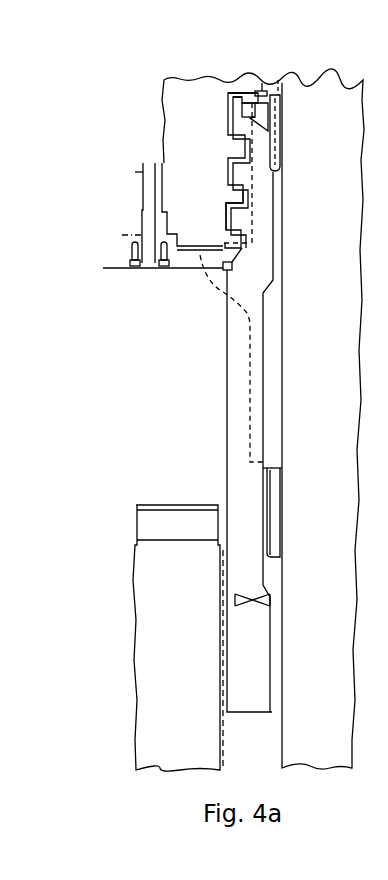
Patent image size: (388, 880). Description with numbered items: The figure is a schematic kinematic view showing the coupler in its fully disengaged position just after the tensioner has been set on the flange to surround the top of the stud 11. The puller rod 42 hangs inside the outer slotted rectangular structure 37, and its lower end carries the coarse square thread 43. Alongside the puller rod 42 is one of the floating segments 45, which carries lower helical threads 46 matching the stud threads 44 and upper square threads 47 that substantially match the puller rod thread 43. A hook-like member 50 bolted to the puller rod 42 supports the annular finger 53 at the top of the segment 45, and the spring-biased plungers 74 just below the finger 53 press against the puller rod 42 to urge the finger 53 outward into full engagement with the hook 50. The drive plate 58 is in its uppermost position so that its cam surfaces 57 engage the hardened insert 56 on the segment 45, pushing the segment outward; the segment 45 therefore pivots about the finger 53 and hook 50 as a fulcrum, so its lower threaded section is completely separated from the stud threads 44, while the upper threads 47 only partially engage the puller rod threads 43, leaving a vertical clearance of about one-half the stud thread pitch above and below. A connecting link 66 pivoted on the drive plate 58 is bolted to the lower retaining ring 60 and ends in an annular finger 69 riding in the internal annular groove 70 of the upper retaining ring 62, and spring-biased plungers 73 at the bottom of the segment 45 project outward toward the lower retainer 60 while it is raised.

The stud 11 is at (188, 598).
The outer slotted rectangular structure 37 is at (307, 90).
The puller rod 42 is at (201, 102).
The coarse square thread 43 is at (233, 152).
The stud threads 44 is at (220, 677).
The segments 45 is at (261, 278).
The threads 46 is at (227, 677).
The threads 47 is at (234, 217).
The hook-like members 50 is at (262, 83).
The annular finger 53 is at (240, 102).
The hardened insert 56 is at (223, 271).
The cam surfaces 57 is at (226, 248).
The drive plate 58 is at (182, 270).
The lower annular retaining ring section 60 is at (274, 497).
The upper annular retaining ring 62 is at (272, 112).
The connecting link 66 is at (251, 243).
The annular finger 69 is at (278, 77).
The internal annular groove 70 is at (279, 153).
The spring biased plungers 73 is at (268, 600).
The spring-biased plungers 74 is at (241, 111).